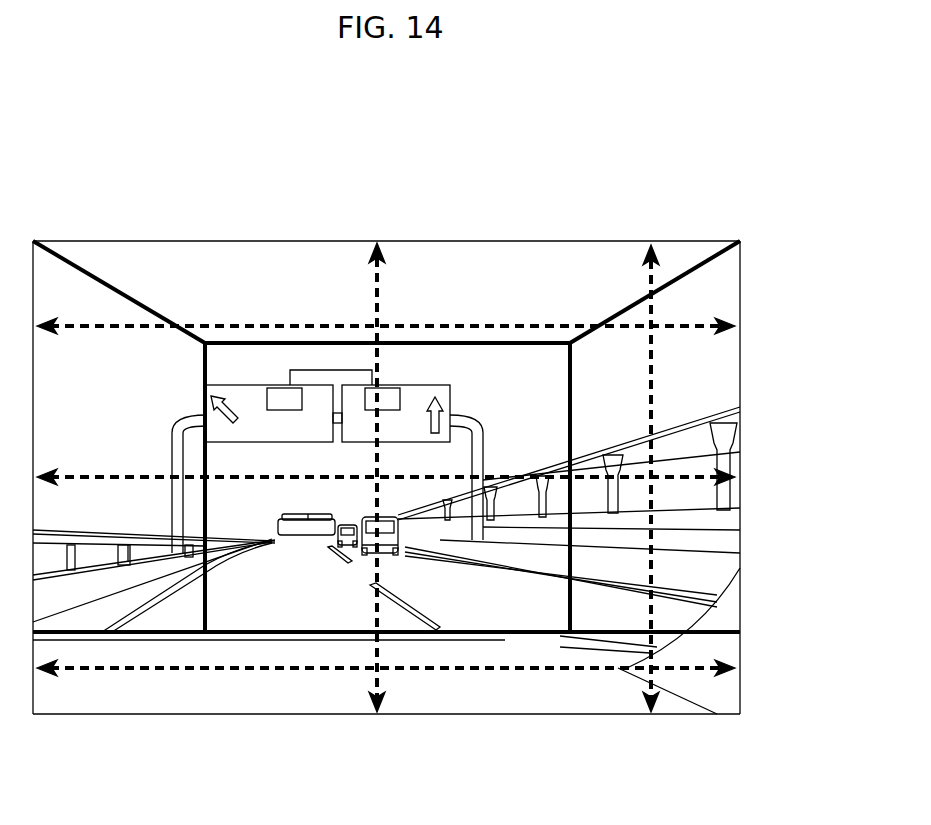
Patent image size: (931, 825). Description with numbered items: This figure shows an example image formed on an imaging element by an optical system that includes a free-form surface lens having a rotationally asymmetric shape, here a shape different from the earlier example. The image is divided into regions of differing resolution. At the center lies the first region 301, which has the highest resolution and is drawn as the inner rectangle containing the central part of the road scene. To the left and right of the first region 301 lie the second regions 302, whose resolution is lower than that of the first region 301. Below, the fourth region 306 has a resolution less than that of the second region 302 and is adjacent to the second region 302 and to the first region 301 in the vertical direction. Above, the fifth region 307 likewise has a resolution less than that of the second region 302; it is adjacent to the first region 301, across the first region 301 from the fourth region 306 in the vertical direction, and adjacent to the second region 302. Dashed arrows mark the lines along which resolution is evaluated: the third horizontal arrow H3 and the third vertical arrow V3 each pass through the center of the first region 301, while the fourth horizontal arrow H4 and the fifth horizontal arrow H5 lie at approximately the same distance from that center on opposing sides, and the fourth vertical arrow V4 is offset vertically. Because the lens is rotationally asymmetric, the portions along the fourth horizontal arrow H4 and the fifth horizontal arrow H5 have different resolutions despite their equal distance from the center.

The first region 301 is at (547, 393).
The second region 302 is at (90, 301).
The fourth region 306 is at (555, 660).
The fifth region 307 is at (533, 281).
The third horizontal arrow H3 is at (737, 477).
The fourth horizontal arrow H4 is at (737, 326).
The fifth horizontal arrow H5 is at (737, 668).
The third vertical arrow V3 is at (378, 243).
The fourth vertical arrow V4 is at (652, 245).